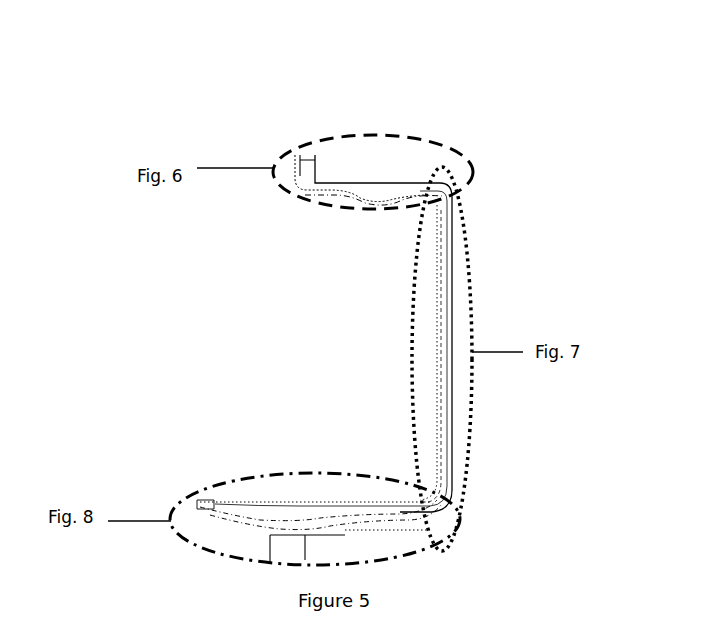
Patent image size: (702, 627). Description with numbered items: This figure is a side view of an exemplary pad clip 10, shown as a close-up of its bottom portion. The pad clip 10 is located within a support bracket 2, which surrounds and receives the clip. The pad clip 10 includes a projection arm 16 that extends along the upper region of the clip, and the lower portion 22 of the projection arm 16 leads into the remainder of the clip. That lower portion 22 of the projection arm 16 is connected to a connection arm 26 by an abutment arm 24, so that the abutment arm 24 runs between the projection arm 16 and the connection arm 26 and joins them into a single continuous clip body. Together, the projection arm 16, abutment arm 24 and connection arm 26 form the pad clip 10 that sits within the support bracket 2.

The support bracket 2 is at (348, 539).
The pad clip 10 is at (283, 300).
The projection arm 16 is at (464, 124).
The lower portion 22 is at (370, 195).
The abutment arm 24 is at (497, 288).
The connection arm 26 is at (323, 447).